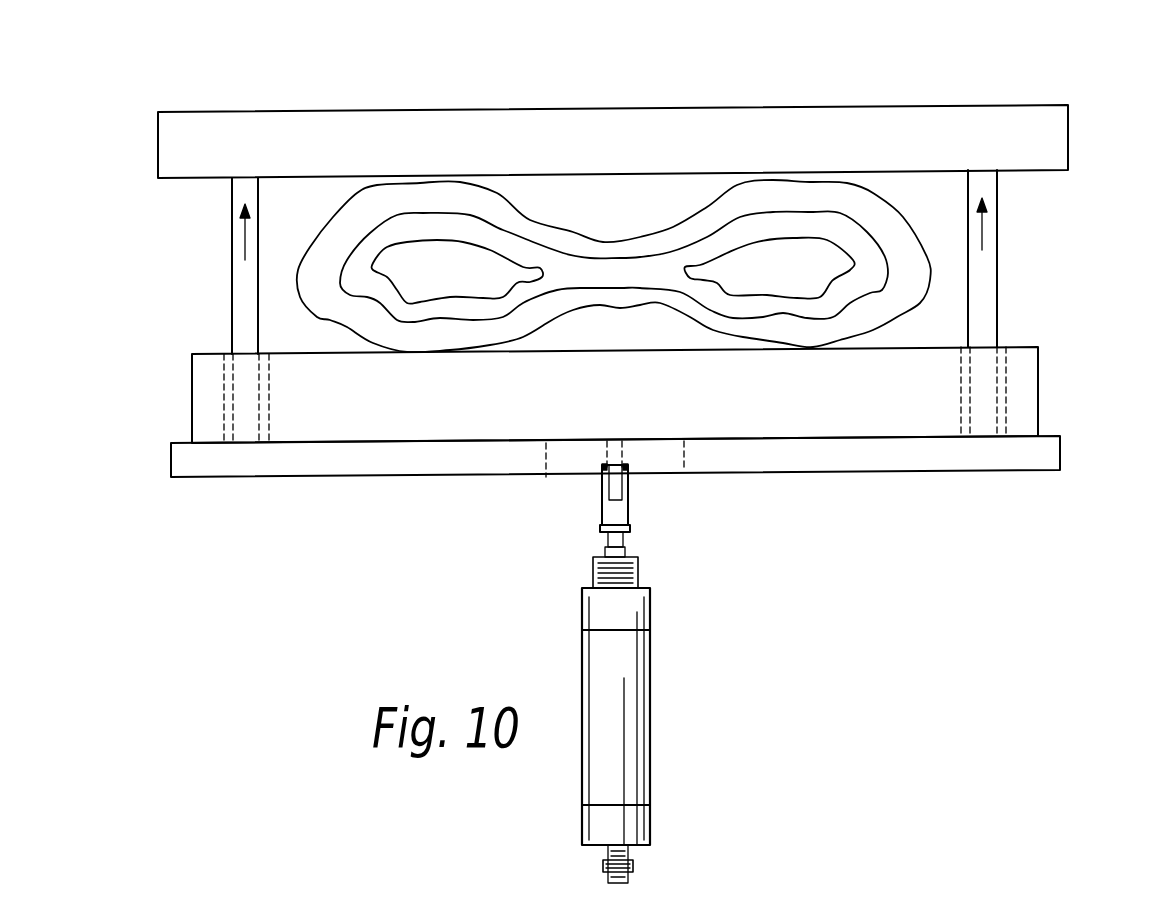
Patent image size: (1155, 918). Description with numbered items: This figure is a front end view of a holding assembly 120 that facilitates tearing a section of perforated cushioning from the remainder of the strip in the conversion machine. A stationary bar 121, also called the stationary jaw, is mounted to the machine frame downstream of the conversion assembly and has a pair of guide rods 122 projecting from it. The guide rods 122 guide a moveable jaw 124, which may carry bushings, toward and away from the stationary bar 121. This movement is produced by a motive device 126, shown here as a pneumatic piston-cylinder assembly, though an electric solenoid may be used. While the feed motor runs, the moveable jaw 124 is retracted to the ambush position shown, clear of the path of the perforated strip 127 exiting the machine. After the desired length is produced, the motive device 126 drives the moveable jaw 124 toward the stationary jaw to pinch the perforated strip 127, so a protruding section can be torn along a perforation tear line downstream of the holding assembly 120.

The holding assembly 120 is at (415, 548).
The stationary bar 121 is at (380, 147).
The guide rods 122 is at (235, 282).
The moveable jaw 124 is at (1040, 395).
The motive device 126 is at (650, 765).
The perforated strip 127 is at (608, 242).